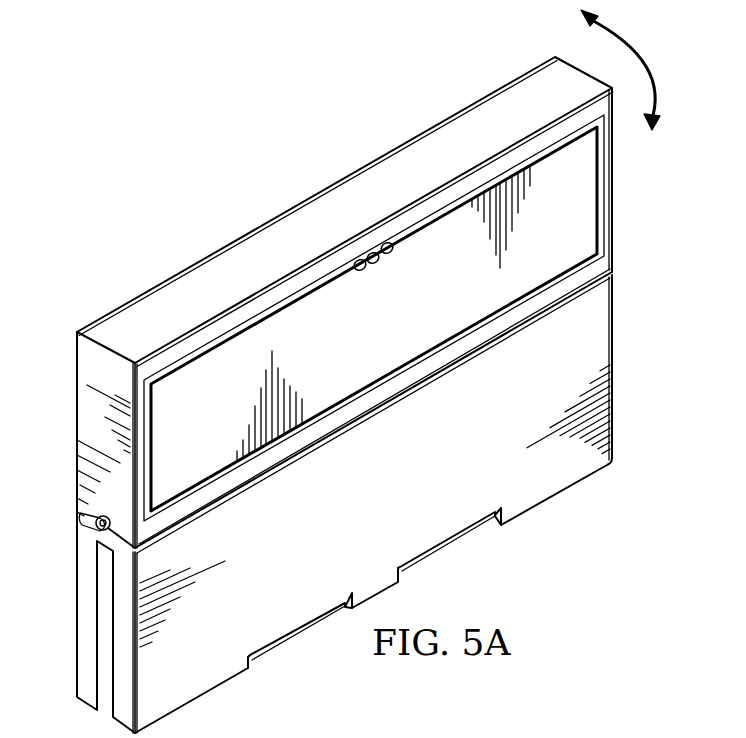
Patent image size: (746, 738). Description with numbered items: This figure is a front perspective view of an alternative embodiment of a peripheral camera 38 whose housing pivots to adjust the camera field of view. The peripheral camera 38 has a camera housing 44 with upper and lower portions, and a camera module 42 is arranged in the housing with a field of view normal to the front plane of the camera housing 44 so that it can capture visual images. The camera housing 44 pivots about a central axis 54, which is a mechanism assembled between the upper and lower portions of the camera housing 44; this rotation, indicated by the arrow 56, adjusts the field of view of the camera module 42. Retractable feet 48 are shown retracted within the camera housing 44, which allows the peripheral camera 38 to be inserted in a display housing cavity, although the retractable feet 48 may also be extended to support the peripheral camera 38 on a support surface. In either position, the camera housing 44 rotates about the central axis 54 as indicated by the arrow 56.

The peripheral camera 38 is at (383, 302).
The camera module 42 is at (381, 272).
The camera housing 44 is at (622, 210).
The retractable feet 48 is at (284, 645).
The central axis 54 is at (80, 520).
The arrow 56 is at (640, 56).